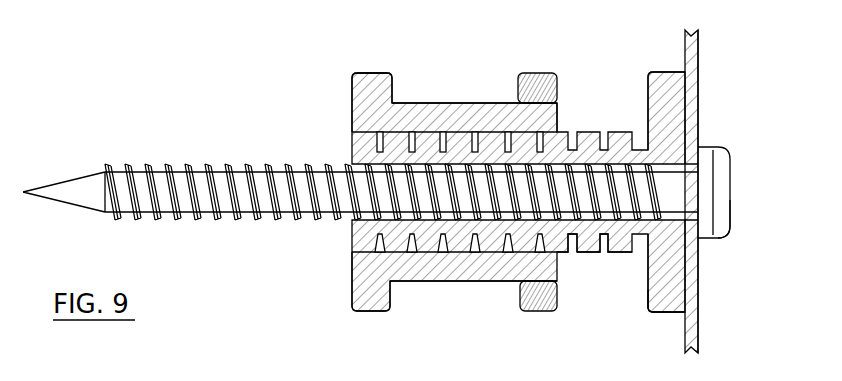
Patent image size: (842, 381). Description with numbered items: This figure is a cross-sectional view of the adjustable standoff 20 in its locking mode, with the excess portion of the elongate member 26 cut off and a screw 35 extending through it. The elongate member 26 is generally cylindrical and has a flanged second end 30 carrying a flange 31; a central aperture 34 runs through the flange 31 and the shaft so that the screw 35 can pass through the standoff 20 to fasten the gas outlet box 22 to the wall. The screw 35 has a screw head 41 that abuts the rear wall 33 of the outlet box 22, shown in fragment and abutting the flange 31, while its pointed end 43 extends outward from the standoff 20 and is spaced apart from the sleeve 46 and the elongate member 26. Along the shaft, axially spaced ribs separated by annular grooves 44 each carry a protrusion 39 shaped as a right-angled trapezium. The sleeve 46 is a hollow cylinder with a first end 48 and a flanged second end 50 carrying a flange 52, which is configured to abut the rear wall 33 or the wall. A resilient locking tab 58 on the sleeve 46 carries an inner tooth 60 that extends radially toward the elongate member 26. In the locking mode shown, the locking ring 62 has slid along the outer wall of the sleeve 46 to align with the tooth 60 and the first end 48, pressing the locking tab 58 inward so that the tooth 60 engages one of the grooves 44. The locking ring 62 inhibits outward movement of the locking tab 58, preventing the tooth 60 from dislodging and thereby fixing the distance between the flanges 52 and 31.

The adjustable standoff 20 is at (748, 88).
The gas outlet box 22 is at (699, 275).
The elongate member 26 is at (663, 62).
The flanged second end 30 is at (685, 313).
The flange 31 is at (662, 305).
The rear wall 33 is at (699, 260).
The central aperture 34 is at (352, 253).
The screw 35 is at (733, 184).
The protrusion 39 is at (587, 253).
The screw head 41 is at (731, 208).
The pointed end 43 is at (42, 188).
The annular groove 44 is at (567, 247).
The sleeve 46 is at (372, 72).
The first end 48 is at (558, 114).
The flanged second end 50 is at (352, 95).
The flange 52 is at (391, 74).
The locking tab 58 is at (428, 266).
The inner tooth 60 is at (553, 252).
The locking ring 62 is at (538, 72).